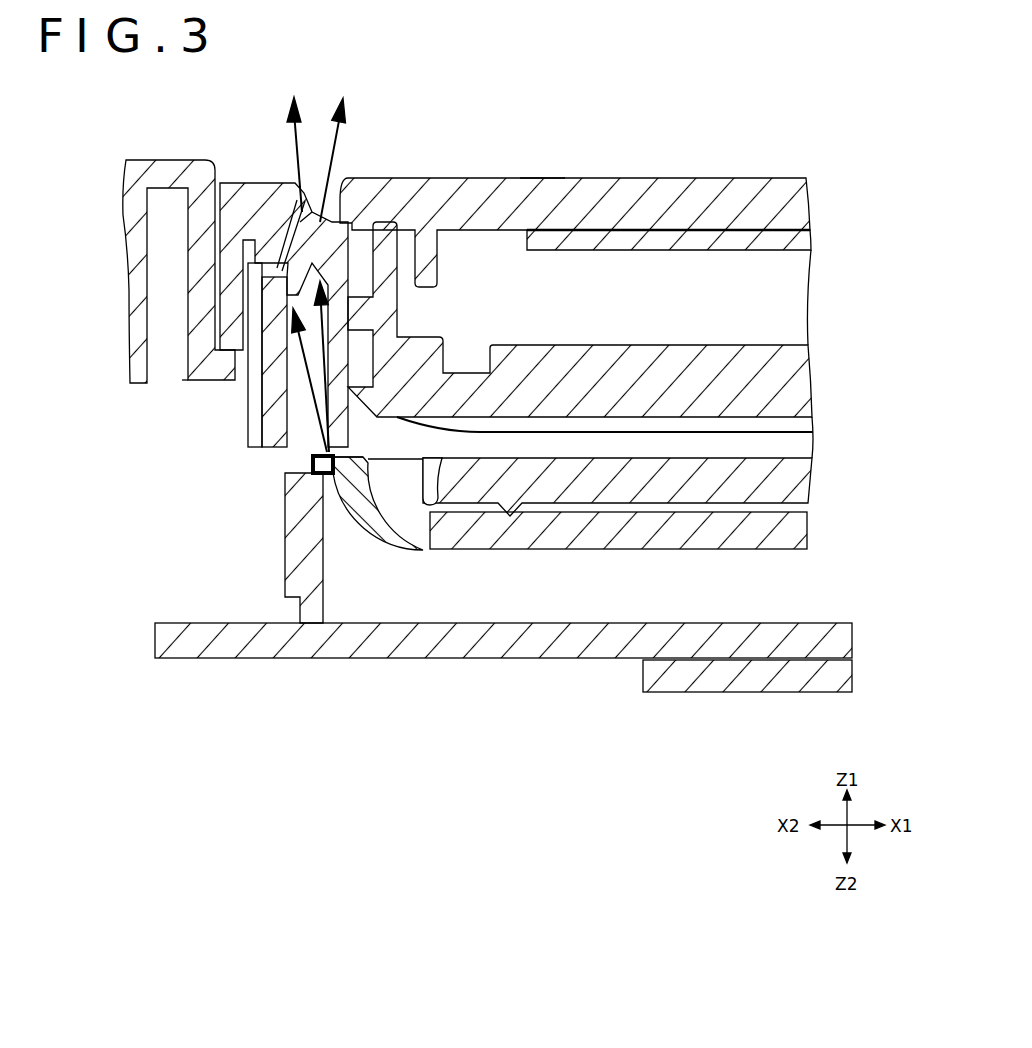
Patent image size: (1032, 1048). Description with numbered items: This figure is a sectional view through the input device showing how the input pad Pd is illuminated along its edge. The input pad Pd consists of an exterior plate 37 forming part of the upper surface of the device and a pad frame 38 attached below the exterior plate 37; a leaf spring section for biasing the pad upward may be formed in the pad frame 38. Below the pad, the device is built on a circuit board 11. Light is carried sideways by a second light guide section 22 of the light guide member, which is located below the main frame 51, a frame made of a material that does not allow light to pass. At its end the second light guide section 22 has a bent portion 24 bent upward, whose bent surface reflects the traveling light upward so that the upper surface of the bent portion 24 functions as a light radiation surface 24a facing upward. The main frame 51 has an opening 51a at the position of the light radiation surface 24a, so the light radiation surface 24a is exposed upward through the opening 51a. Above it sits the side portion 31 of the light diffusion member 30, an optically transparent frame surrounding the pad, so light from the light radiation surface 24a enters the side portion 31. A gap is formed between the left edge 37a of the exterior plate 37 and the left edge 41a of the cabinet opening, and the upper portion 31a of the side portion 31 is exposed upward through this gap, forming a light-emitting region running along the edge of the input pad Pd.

The circuit board 11 is at (446, 650).
The second light guide section 22 is at (595, 547).
The bent portion 24 is at (385, 527).
The light radiation surface 24a is at (345, 456).
The light diffusion member 30 is at (253, 432).
The side portion 31 is at (267, 393).
The upper portion 31a is at (303, 225).
The exterior plate 37 is at (627, 192).
The left edge 37a is at (340, 185).
The pad frame 38 is at (603, 355).
The left edge 41a is at (302, 190).
The main frame 51 is at (290, 537).
The opening 51a is at (434, 482).
The input pad Pd is at (543, 178).